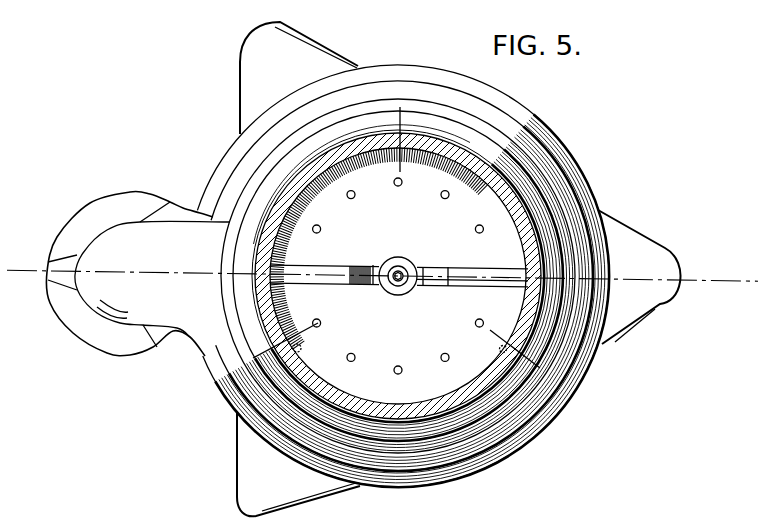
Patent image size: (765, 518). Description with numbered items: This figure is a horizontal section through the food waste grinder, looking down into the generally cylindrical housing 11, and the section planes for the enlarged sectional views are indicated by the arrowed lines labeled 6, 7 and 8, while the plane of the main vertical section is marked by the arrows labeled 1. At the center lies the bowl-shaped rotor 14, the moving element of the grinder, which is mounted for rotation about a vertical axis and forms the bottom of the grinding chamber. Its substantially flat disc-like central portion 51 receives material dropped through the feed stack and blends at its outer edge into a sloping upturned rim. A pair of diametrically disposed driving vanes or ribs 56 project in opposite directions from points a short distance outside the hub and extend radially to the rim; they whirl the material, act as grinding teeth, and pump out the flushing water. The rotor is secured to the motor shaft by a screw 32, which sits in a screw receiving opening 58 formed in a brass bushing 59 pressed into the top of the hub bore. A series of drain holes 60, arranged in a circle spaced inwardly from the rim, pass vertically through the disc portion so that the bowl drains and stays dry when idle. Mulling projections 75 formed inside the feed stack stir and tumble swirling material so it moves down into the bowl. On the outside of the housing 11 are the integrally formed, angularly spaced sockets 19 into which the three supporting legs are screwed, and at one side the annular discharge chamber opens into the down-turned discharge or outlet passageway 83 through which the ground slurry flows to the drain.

The section line 1- 1 is at (22, 250).
The section line 6- 6 is at (403, 169).
The section line 7- 7 is at (256, 346).
The section line 8- 8 is at (521, 370).
The housing 11 is at (528, 236).
The bowl-shaped rotor 14 is at (333, 154).
The sockets 19 is at (239, 86).
The screw 32 is at (398, 295).
The flat disc-like central portion 51 is at (273, 209).
The driving vanes or ribs 56 is at (462, 273).
The screw receiving opening 58 is at (400, 258).
The bushing 59 is at (384, 263).
The drain holes 60 is at (398, 194).
The mulling projections 75 is at (398, 152).
The discharge or outlet passageway 83 is at (164, 229).